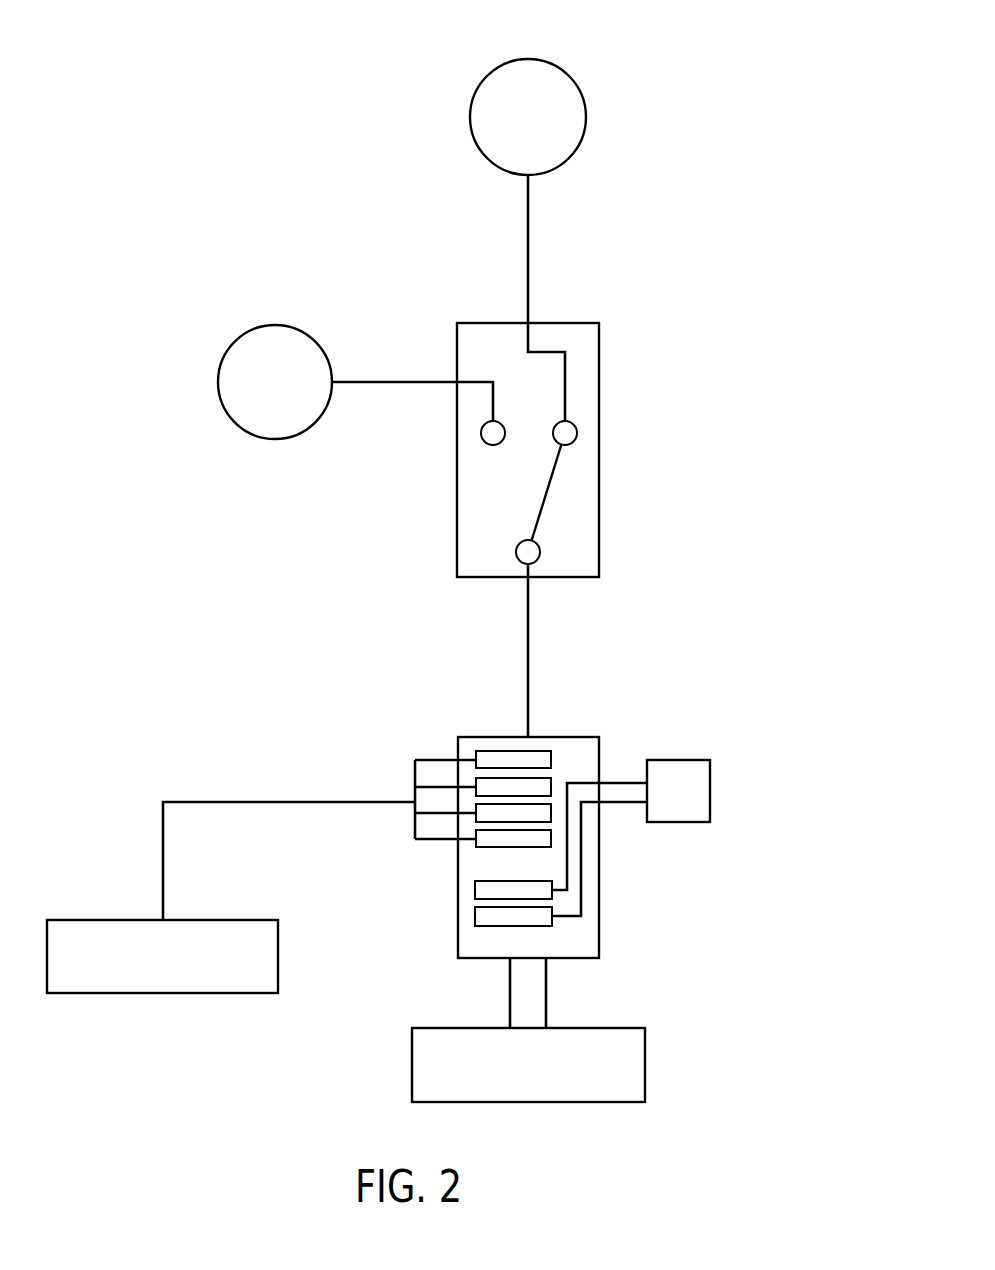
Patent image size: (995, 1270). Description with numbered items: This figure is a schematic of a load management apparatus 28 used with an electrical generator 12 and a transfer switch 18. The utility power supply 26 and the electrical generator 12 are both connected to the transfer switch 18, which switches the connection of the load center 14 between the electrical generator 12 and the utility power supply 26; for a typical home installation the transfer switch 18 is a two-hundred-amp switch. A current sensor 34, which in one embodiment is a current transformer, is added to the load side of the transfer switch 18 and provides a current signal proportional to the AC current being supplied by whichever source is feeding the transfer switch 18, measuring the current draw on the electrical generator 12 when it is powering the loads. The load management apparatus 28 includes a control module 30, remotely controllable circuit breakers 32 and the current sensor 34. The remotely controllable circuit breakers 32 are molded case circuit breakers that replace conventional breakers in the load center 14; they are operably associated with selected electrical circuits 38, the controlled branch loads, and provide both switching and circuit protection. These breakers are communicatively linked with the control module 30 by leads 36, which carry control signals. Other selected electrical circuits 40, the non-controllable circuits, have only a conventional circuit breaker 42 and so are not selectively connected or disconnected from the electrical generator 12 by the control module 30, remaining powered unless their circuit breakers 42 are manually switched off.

The electrical generator 12 is at (263, 396).
The load center 14 is at (600, 717).
The transfer switch 18 is at (600, 447).
The utility power supply 26 is at (516, 131).
The load management apparatus 28 is at (396, 679).
The control module 30 is at (680, 760).
The remotely controllable circuit breakers 32 is at (472, 889).
The current sensor 34 is at (521, 562).
The leads 36 is at (568, 839).
The electrical circuits 38 is at (527, 1102).
The selected electrical circuits 40 is at (163, 993).
The conventional circuit breaker 42 is at (536, 813).